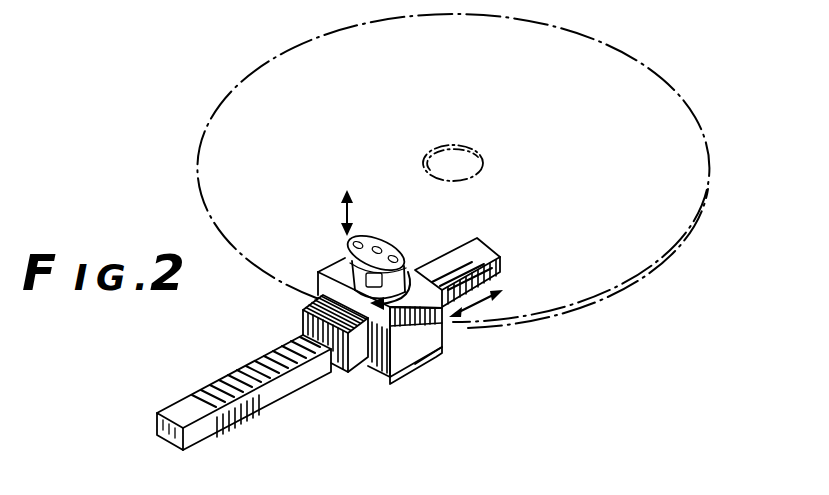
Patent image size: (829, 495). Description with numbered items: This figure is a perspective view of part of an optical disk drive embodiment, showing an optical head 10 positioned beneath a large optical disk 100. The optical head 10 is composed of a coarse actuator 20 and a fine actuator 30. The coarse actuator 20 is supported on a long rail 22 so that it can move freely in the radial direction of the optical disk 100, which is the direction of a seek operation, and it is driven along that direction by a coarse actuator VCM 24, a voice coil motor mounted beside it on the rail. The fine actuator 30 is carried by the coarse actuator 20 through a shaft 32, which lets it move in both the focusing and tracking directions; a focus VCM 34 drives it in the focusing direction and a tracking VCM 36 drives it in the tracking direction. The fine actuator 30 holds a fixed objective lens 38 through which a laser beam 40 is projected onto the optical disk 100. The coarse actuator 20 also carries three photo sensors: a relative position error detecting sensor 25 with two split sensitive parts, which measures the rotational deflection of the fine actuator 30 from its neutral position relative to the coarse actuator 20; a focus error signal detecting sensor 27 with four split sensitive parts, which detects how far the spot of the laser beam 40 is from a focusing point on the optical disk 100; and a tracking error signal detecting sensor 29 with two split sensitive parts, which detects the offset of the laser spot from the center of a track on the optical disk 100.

The optical disk 100 is at (670, 100).
The optical head 10 is at (327, 168).
The coarse actuator 20 is at (318, 272).
The rail 22 is at (287, 388).
The coarse actuator VCM 24 is at (350, 374).
The relative position error (RPE) detecting sensor 25 is at (349, 242).
The focus error signal (FES) detecting sensor 27 is at (406, 376).
The tracking error signal (TES) detecting sensor 29 is at (424, 362).
The fine actuator 30 is at (346, 254).
The shaft 32 is at (378, 245).
The focus VCM 34 is at (416, 342).
The tracking VCM 36 is at (356, 238).
The objective lens 38 is at (420, 262).
The laser beam 40 is at (390, 242).